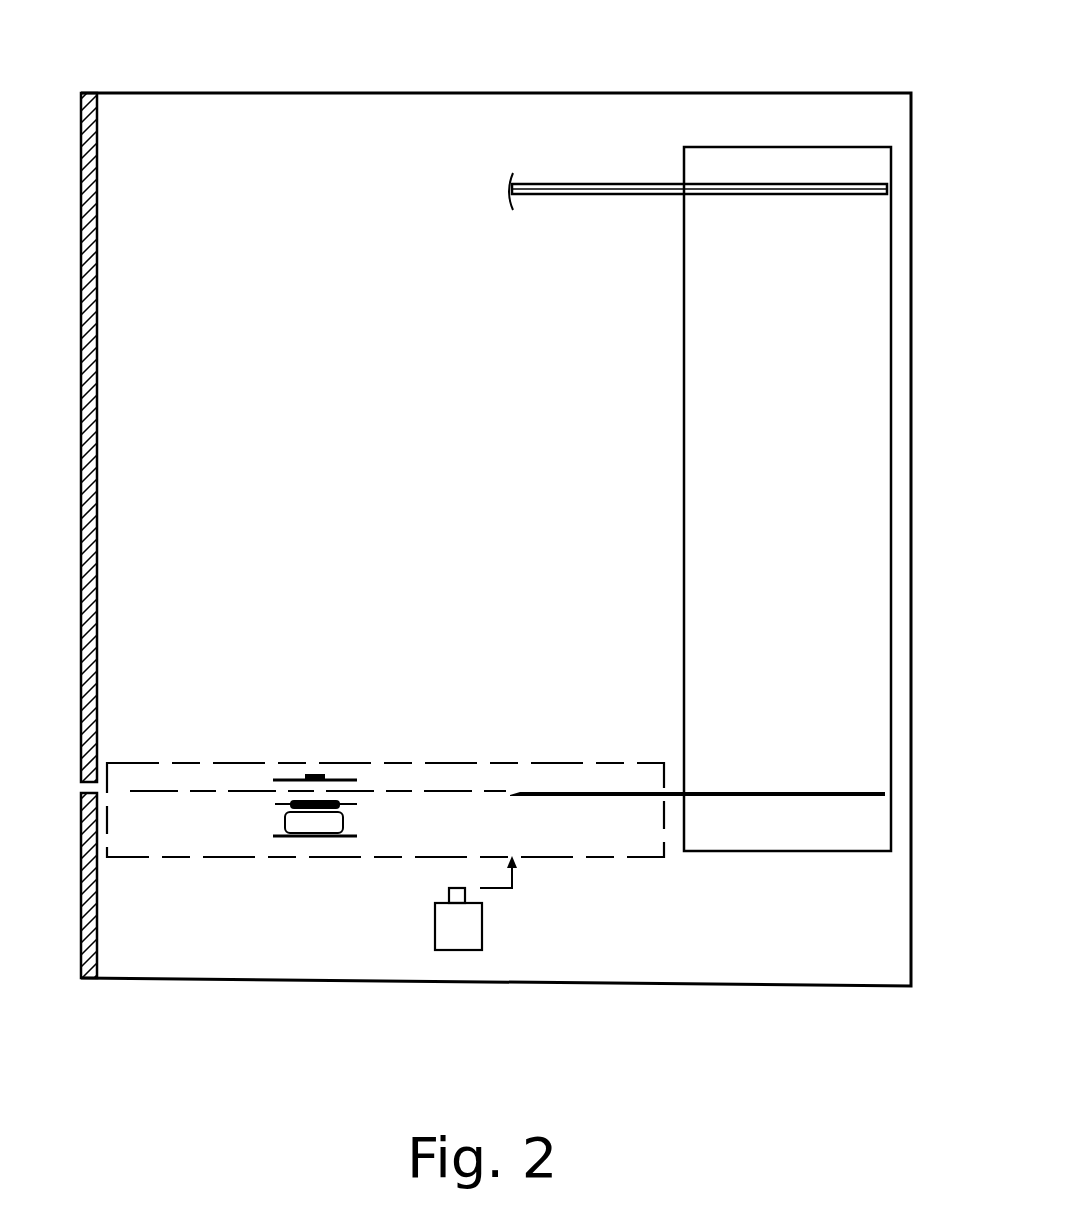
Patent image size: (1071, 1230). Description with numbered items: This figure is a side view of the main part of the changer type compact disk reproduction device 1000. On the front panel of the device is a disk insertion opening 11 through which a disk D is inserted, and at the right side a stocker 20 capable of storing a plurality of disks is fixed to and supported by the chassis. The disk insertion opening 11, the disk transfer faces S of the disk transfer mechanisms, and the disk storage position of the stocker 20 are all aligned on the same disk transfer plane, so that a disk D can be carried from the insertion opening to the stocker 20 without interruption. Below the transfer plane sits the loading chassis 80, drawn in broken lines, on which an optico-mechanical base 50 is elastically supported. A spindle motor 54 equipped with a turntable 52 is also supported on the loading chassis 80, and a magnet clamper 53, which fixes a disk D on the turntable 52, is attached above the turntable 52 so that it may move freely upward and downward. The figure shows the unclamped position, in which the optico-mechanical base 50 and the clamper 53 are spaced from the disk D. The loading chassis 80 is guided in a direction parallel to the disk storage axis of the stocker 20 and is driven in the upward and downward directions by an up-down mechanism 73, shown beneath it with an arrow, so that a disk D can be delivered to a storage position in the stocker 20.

The changer type compact disk reproduction device 1000 is at (582, 78).
The disk insertion opening 11 is at (97, 791).
The stocker 20 is at (696, 172).
The disk D is at (508, 186).
The disk transfer faces S is at (192, 790).
The loading chassis 80 is at (404, 776).
The magnet clamper 53 is at (300, 778).
The turntable 52 is at (290, 806).
The spindle motor 54 is at (340, 826).
The optico-mechanical base 50 is at (297, 840).
The up-down mechanism 73 is at (447, 916).